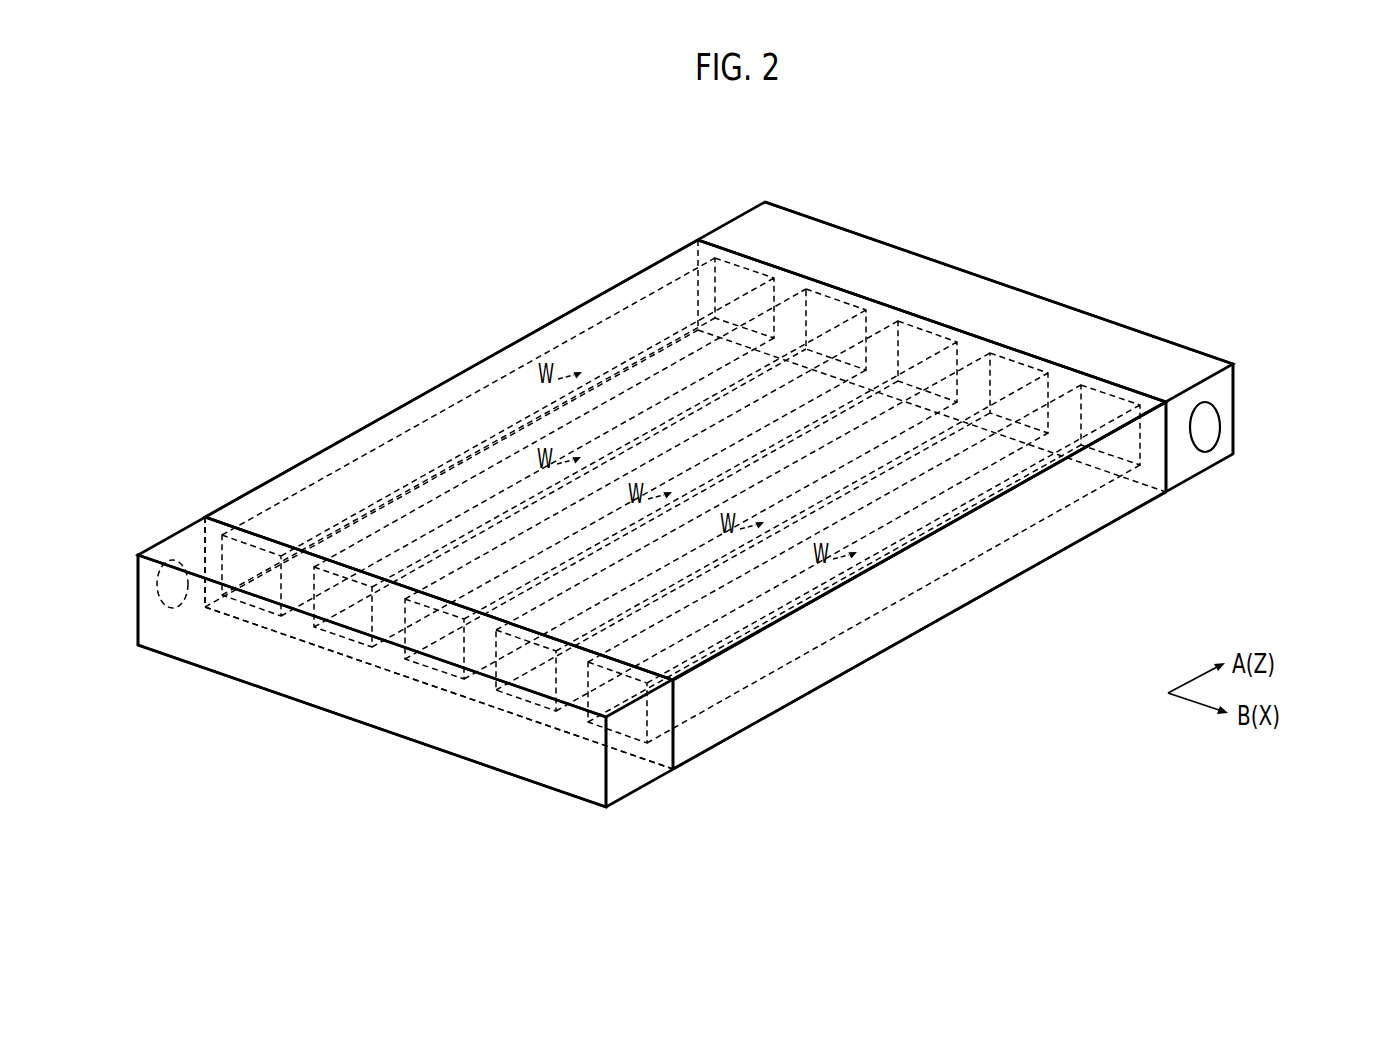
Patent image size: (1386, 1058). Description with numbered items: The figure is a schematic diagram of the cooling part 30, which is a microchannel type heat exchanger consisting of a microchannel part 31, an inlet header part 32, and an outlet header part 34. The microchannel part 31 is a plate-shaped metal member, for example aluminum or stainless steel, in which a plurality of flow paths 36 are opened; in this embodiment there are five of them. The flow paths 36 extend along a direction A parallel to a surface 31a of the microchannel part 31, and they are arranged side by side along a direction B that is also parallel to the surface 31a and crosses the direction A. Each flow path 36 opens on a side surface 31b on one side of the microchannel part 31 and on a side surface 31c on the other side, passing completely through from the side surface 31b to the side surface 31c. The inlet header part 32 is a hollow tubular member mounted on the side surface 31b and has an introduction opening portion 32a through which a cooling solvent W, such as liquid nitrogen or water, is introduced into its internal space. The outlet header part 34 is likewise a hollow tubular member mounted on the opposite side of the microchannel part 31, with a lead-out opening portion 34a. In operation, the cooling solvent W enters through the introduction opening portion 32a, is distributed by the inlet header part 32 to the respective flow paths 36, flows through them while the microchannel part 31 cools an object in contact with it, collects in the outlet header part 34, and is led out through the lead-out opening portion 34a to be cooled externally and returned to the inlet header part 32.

The cooling part 30 is at (977, 727).
The microchannel part 31 is at (816, 675).
The surface of the microchannel part 31a is at (923, 628).
The side surface on one side 31b is at (213, 535).
The side surface on the other side 31c is at (970, 353).
The inlet header part 32 is at (363, 703).
The introduction opening portion 32a is at (173, 608).
The outlet header part 34 is at (1170, 360).
The lead-out opening portion 34a is at (1205, 425).
The flow paths 36 is at (928, 327).